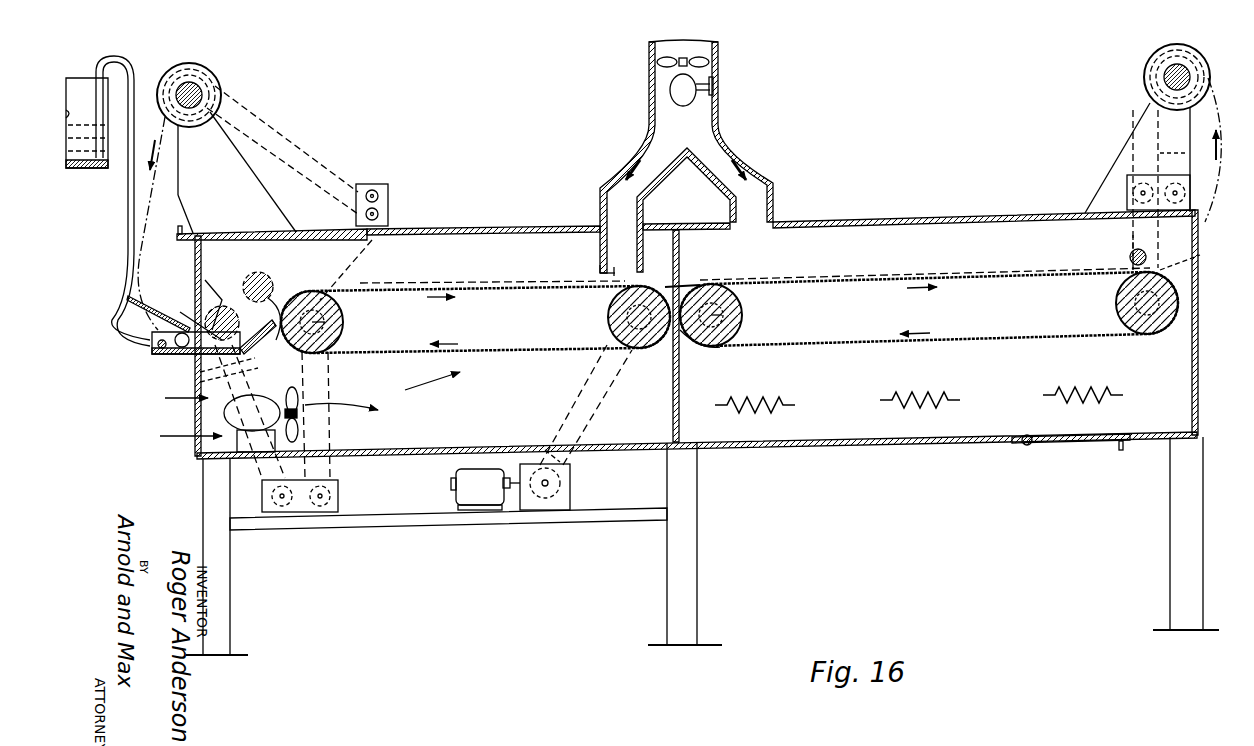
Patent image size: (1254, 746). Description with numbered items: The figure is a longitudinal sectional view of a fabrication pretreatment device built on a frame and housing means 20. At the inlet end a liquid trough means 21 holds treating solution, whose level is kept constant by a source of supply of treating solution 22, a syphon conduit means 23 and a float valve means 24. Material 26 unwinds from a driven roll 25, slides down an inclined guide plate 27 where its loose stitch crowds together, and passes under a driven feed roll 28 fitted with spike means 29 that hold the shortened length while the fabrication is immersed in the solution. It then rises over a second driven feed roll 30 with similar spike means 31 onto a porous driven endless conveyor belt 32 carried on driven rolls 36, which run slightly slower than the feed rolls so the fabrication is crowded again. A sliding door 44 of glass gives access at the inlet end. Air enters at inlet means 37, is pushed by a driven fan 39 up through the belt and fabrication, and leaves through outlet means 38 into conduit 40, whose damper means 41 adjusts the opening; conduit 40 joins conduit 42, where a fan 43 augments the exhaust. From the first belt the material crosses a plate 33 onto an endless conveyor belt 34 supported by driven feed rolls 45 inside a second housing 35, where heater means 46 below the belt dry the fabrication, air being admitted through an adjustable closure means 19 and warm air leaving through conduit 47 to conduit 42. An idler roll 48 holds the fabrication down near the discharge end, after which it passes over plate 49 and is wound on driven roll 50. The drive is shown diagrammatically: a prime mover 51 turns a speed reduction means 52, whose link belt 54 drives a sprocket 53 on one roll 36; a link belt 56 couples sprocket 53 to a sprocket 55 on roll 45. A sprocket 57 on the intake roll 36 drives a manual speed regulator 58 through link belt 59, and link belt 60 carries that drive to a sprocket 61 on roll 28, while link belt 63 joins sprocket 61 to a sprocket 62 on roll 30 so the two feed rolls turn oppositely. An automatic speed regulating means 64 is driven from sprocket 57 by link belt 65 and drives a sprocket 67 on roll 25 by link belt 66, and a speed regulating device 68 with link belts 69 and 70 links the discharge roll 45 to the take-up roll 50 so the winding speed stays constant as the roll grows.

The adjustable closure means 19 is at (1092, 441).
The frame and housing means 20 is at (445, 228).
The liquid trough means 21 is at (258, 350).
The source of supply of treating solution 22 is at (88, 168).
The syphon conduit means 23 is at (115, 335).
The float valve means 24 is at (152, 352).
The driven roll 25 is at (215, 78).
The material 26 is at (938, 273).
The guide plate 27 is at (155, 312).
The driven feed roll 28 is at (190, 316).
The spike means 29 is at (216, 305).
The second driven feed roll 30 is at (260, 272).
The spike means 31 is at (276, 338).
The driven endless conveyor belt 32 is at (500, 290).
The plate 33 is at (683, 284).
The endless conveyor belt 34 is at (870, 283).
The second housing 35 is at (898, 220).
The driven rolls 36 is at (340, 316).
The inlet means 37 is at (196, 422).
The outlet means 38 is at (612, 272).
The driven fan 39 is at (300, 425).
The conduit 40 is at (607, 210).
The damper means 41 is at (640, 162).
The conduit 42 is at (706, 110).
The fan 43 is at (700, 60).
The sliding door 44 is at (296, 230).
The driven feed rolls 45 is at (743, 312).
The heater means 46 is at (885, 402).
The conduit 47 is at (768, 207).
The idler roll 48 is at (1130, 256).
The plate 49 is at (1186, 270).
The driven roll 50 is at (1144, 80).
The prime mover 51 is at (456, 476).
The speed reduction means 52 is at (565, 498).
The sprocket 53 is at (586, 405).
The link belt 54 is at (578, 455).
The sprocket 55 is at (735, 325).
The link belt 56 is at (701, 353).
The sprocket 57 is at (335, 330).
The speed regulator 58 is at (330, 482).
The link belt 59 is at (306, 380).
The link belt 60 is at (200, 382).
The sprocket 61 is at (215, 372).
The sprocket 62 is at (272, 295).
The link belt 63 is at (222, 305).
The speed regulating means 64 is at (388, 192).
The link belt 65 is at (360, 258).
The link belt 66 is at (280, 150).
The sprocket 67 is at (205, 92).
The speed regulating device 68 is at (1127, 183).
The link belt 69 is at (1132, 233).
The link belt 70 is at (1160, 146).